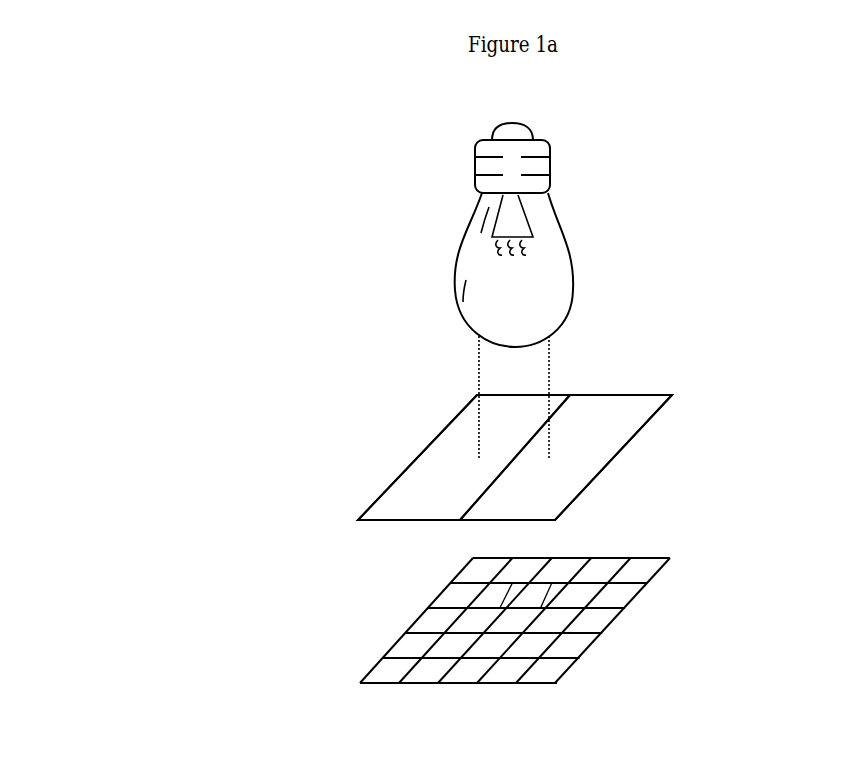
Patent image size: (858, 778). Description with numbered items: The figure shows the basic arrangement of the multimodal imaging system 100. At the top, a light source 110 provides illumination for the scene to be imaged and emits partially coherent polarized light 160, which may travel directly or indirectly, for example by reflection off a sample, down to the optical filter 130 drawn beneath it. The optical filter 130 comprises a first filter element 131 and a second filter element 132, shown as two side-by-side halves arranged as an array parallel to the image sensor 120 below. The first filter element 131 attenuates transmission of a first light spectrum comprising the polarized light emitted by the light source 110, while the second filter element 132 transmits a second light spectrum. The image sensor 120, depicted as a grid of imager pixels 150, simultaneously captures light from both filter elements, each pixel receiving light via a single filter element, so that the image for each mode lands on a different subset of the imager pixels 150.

The multimodal imaging system 100 is at (656, 276).
The light source 110 is at (410, 280).
The image sensor 120 is at (363, 615).
The optical filter 130 is at (382, 448).
The first filter element 131 is at (377, 502).
The second filter element 132 is at (563, 502).
The imager pixels 150 is at (617, 646).
The partially coherent polarized light 160 is at (717, 385).